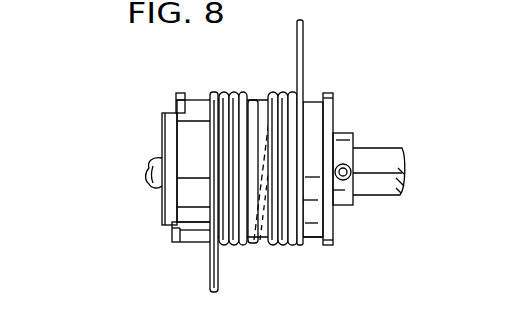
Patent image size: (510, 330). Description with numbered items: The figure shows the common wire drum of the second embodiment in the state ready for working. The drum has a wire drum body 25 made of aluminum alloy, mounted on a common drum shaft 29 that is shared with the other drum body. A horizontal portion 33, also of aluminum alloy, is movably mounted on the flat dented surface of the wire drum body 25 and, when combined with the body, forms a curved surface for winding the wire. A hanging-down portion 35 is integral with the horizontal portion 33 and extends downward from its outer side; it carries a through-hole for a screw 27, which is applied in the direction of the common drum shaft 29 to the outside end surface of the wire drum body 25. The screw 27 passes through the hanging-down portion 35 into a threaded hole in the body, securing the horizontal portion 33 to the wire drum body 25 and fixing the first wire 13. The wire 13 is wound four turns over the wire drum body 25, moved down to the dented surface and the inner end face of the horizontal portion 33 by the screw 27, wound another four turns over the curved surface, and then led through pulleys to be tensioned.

The first wire 13 is at (303, 42).
The wire drum body 25 is at (307, 238).
The screw 27 is at (148, 178).
The common drum shaft 29 is at (378, 187).
The horizontal portion 33 is at (197, 218).
The hanging-down portion 35 is at (158, 212).